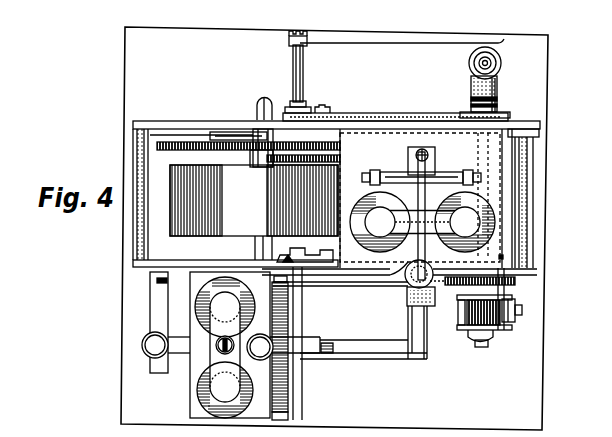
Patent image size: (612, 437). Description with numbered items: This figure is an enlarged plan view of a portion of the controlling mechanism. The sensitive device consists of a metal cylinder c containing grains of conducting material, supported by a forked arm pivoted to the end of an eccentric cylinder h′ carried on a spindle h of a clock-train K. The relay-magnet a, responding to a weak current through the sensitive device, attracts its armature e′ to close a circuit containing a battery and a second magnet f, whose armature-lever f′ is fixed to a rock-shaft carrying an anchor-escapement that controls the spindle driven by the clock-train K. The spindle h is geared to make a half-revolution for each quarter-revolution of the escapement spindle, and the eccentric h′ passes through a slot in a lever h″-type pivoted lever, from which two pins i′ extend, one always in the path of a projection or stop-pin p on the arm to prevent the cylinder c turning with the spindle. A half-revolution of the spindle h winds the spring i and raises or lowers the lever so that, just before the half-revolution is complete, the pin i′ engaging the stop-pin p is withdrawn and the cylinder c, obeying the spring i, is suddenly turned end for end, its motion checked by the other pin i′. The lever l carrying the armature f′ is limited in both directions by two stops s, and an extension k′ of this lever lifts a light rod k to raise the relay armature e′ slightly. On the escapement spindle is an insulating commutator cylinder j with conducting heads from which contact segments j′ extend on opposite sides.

The clock-train K is at (254, 200).
The relay-magnet a is at (426, 198).
The metal cylinder c is at (501, 66).
The projection or stop-pin p is at (471, 82).
The armature e′ is at (438, 220).
The magnet f is at (205, 291).
The armature-lever f′ is at (224, 341).
The anchor-escapement g is at (358, 286).
The spindle h is at (492, 165).
The eccentric cylinder h′ is at (473, 102).
The spring i is at (497, 102).
The pins i′ is at (490, 92).
The cylinder of insulating material j is at (476, 346).
The contact plate or segment j′ is at (462, 302).
The light rod k is at (407, 297).
The extension k′ is at (403, 352).
The lever l is at (185, 348).
The stops s is at (155, 345).